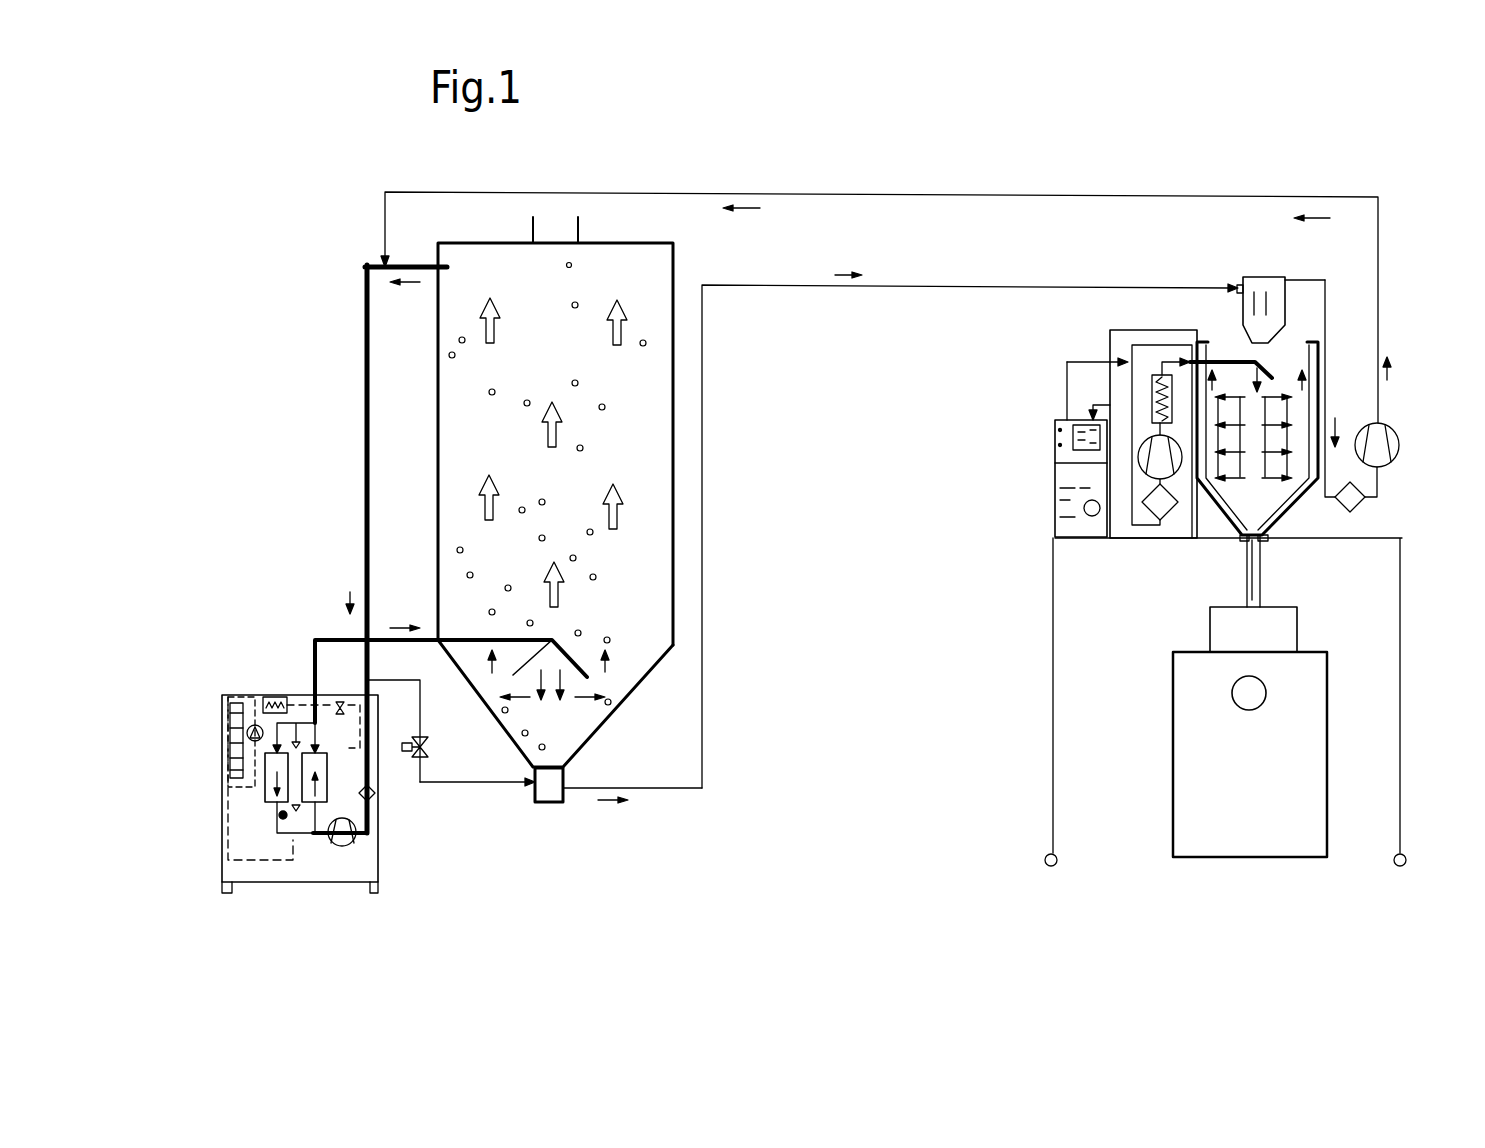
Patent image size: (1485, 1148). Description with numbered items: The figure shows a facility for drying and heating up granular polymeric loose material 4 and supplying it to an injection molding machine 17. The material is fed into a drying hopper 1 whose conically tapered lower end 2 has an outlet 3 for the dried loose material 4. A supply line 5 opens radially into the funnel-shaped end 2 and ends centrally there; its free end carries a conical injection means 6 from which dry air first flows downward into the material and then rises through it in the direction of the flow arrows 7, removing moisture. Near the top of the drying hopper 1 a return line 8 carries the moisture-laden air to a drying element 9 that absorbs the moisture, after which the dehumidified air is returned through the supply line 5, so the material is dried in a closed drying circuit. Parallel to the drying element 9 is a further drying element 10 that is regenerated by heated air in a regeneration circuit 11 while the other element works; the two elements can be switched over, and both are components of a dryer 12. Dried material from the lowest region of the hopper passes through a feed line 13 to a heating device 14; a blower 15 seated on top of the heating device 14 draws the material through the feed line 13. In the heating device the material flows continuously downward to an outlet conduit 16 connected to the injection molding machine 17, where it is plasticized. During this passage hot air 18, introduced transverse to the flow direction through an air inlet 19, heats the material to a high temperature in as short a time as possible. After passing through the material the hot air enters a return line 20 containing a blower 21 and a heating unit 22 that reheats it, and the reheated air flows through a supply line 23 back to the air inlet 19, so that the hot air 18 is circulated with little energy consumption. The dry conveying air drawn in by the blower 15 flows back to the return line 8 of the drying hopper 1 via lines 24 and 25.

The drying hopper 1 is at (672, 540).
The conically tapered lower end 2 is at (613, 710).
The outlet 3 is at (557, 802).
The loose material 4 is at (595, 425).
The supply line 5 is at (430, 637).
The conical injection means 6 is at (573, 657).
The flow arrows 7 is at (470, 478).
The return line 8 is at (367, 355).
The drying element 9 is at (322, 775).
The further drying element 10 is at (272, 775).
The regeneration circuit 11 is at (265, 862).
The dryer 12 is at (297, 697).
The feed line 13 is at (705, 453).
The heating device 14 is at (1293, 503).
The blower 15 is at (1262, 290).
The outlet conduit 16 is at (1253, 563).
The injection molding machine 17 is at (1229, 812).
The hot air 18 is at (1280, 370).
The air inlet 19 is at (1213, 363).
The return line 20 is at (1133, 340).
The blower 21 is at (1155, 460).
The heating unit 22 is at (1157, 398).
The supply line 23 is at (1172, 358).
The line 24 is at (1328, 408).
The line 25 is at (814, 193).